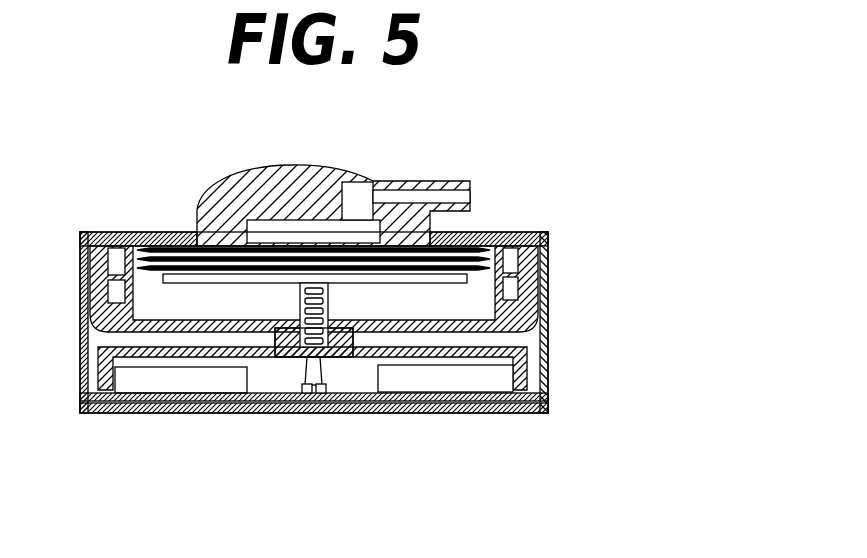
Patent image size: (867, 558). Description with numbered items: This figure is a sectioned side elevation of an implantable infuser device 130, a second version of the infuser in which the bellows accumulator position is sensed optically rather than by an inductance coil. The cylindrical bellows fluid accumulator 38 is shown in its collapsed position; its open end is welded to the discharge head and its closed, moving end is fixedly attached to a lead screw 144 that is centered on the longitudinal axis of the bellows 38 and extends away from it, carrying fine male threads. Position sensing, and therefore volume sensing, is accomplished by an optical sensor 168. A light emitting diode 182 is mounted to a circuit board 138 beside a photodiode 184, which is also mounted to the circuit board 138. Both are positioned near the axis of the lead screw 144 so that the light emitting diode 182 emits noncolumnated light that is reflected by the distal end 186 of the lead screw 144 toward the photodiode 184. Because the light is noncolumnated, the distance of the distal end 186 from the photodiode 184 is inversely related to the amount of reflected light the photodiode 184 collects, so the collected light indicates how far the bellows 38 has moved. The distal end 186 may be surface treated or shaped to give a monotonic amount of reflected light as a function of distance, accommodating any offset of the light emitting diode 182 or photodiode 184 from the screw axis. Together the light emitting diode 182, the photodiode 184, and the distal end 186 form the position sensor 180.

The infuser device 130 is at (658, 186).
The bellows fluid accumulator 38 is at (546, 266).
The circuit board 138 is at (547, 397).
The lead screw 144 is at (330, 294).
The distal end of lead screw 186 is at (300, 342).
The photodiode 184 is at (303, 394).
The light emitting diode 182 is at (318, 396).
The optical sensor 168 is at (284, 374).
The position sensor 180 is at (345, 380).